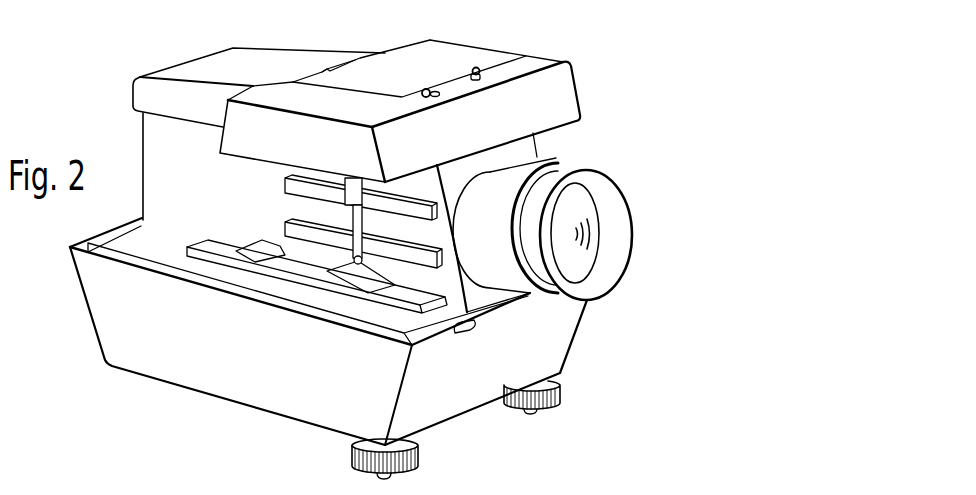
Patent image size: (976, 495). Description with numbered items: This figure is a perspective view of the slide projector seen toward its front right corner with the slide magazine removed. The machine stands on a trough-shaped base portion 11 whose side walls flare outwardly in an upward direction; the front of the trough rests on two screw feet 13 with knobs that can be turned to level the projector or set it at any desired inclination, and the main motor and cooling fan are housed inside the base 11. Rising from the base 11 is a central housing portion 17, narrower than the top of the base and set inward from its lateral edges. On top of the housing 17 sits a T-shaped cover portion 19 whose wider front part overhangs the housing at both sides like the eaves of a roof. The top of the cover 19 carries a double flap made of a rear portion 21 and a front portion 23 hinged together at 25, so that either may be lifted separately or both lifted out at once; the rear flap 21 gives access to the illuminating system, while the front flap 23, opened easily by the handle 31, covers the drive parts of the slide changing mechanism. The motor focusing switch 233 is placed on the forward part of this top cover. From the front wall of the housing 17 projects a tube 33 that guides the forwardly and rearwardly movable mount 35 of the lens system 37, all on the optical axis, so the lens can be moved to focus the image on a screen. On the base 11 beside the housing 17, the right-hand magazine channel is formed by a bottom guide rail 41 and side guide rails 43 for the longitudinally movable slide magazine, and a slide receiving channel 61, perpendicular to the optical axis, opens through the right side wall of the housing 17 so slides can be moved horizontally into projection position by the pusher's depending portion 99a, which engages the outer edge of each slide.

The base portion 11 is at (105, 327).
The screw feet 13 is at (500, 418).
The central housing portion 17 is at (148, 129).
The cover portion 19 is at (513, 63).
The rear flap portion 21 is at (273, 56).
The front flap portion 23 is at (417, 70).
The hinge 25 is at (328, 70).
The handle 31 is at (473, 66).
The forwardly projecting tube 33 is at (502, 277).
The lens mount 35 is at (538, 280).
The lens system 37 is at (578, 263).
The bottom guide rail 41 is at (255, 250).
The side guide rails 43 is at (285, 227).
The slide receiving channel 61 is at (364, 228).
The slide pusher depending portion 99a is at (345, 196).
The motor focusing switch 233 is at (422, 97).